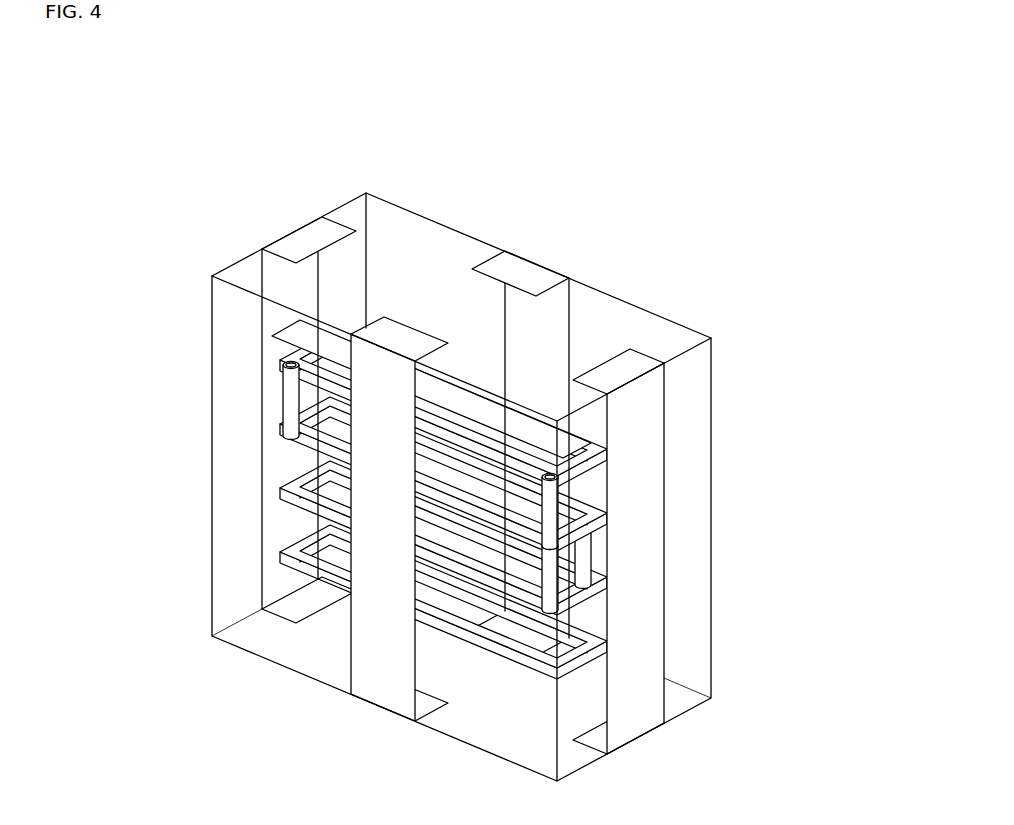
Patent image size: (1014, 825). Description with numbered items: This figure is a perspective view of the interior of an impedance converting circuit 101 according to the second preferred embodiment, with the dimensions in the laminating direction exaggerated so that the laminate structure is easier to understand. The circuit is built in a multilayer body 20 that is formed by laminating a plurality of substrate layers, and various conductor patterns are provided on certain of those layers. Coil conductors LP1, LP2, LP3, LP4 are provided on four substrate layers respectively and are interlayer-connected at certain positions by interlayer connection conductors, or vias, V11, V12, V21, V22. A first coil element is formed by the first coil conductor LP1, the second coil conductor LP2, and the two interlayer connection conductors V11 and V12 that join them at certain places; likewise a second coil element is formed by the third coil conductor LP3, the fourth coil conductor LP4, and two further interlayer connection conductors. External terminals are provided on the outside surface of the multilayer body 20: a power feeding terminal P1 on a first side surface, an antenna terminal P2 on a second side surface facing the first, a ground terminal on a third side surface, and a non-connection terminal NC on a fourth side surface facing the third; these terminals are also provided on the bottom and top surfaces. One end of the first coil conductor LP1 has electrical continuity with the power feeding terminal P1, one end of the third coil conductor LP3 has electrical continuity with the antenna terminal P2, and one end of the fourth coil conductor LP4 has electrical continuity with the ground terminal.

The impedance converting circuit 101 is at (713, 200).
The multilayer body 20 is at (716, 333).
The power feeding terminal P1 is at (305, 238).
The antenna terminal P2 is at (633, 362).
The non-connection terminal NC is at (398, 340).
The first coil conductor LP1 is at (308, 391).
The second coil conductor LP2 is at (296, 448).
The third coil conductor LP3 is at (296, 519).
The fourth coil conductor LP4 is at (287, 581).
The interlayer connection conductor V11 is at (554, 497).
The interlayer connection conductor V12 is at (288, 388).
The interlayer connection conductor V21 is at (591, 553).
The interlayer connection conductor V22 is at (545, 582).